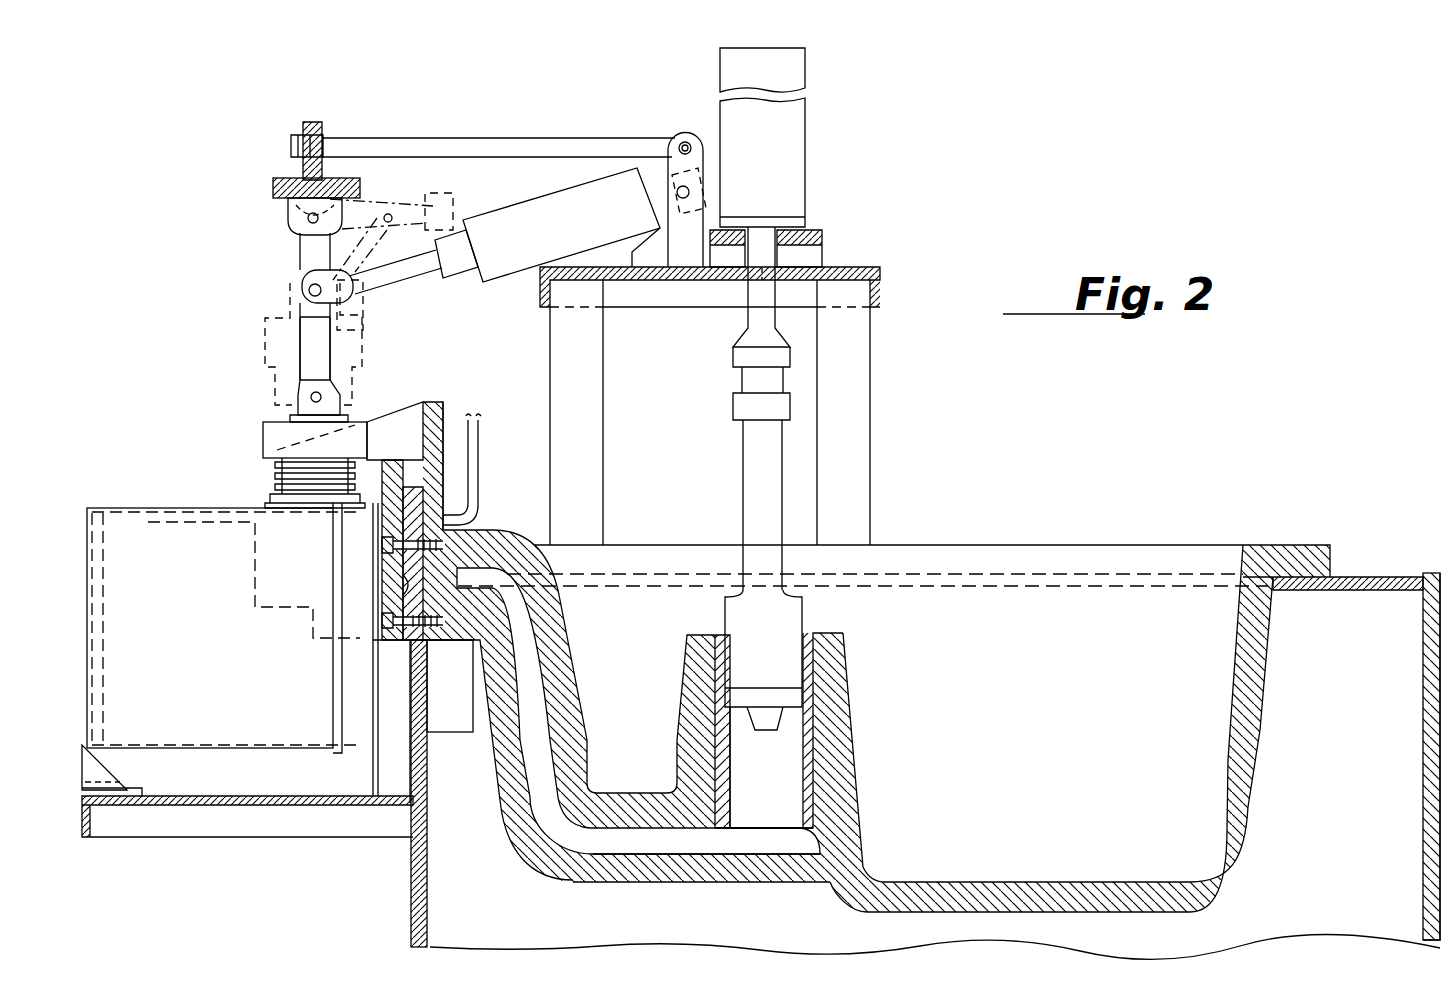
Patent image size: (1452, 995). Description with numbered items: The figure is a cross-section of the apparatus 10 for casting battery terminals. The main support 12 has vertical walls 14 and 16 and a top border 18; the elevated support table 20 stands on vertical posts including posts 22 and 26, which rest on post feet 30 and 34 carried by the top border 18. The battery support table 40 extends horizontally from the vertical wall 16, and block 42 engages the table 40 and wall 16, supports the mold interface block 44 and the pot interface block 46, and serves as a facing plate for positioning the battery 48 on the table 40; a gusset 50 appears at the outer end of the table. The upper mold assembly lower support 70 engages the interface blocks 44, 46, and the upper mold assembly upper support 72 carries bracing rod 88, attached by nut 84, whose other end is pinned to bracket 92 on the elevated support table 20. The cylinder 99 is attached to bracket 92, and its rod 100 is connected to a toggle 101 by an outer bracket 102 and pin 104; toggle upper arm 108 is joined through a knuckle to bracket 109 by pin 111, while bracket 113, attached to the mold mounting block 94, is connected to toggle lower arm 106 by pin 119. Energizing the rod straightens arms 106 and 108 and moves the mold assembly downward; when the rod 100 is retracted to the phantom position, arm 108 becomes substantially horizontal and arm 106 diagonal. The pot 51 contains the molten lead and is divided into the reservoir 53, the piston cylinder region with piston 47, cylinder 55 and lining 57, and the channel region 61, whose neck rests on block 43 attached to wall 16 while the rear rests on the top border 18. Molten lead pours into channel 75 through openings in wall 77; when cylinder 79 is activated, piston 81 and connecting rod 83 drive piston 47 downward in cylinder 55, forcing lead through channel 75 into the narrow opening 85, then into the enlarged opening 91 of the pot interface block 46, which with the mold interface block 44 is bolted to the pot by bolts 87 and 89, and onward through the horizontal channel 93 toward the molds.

The apparatus 10 is at (1302, 419).
The main support 12 is at (1430, 568).
The vertical wall 14 is at (1428, 677).
The vertical wall 16 is at (415, 908).
The top border 18 is at (1347, 577).
The elevated support table 20 is at (882, 263).
The vertical post 22 is at (585, 415).
The vertical post 26 is at (862, 385).
The post foot 30 is at (640, 572).
The post foot 34 is at (905, 580).
The battery support table 40 is at (287, 805).
The block 42 is at (393, 783).
The block 43 is at (457, 740).
The mold interface block 44 is at (393, 497).
The pot interface block 46 is at (413, 497).
The piston 47 is at (778, 627).
The battery 48 is at (121, 522).
The gusset bracket 50 is at (95, 770).
The pot 51 is at (1262, 792).
The reservoir 53 is at (1128, 863).
The cylinder 55 is at (777, 778).
The lining 57 is at (810, 722).
The channel region 61 is at (585, 716).
The upper mold assembly lower support 70 is at (406, 435).
The upper mold assembly upper support 72 is at (280, 188).
The channel 75 is at (745, 840).
The wall 77 is at (848, 823).
The cylinder 79 is at (780, 148).
The piston 81 is at (750, 318).
The connecting rod 83 is at (753, 457).
The nut 84 is at (300, 146).
The narrow opening 85 is at (450, 686).
The bolt 87 is at (384, 625).
The bracing rod 88 is at (455, 137).
The bolt 89 is at (382, 549).
The enlarged opening 91 is at (452, 537).
The bracket 92 is at (680, 163).
The channel 93 is at (397, 578).
The mold mounting block 94 is at (273, 437).
The cylinder 99 is at (545, 212).
The rod 100 is at (424, 268).
The toggle 101 is at (266, 318).
The outer bracket 102 is at (366, 290).
The pin 104 is at (303, 292).
The toggle lower arm 106 is at (318, 348).
The toggle upper arm 108 is at (302, 260).
The bracket 109 is at (290, 215).
The pin 111 is at (306, 222).
The bracket 113 is at (273, 398).
The pin 119 is at (308, 395).